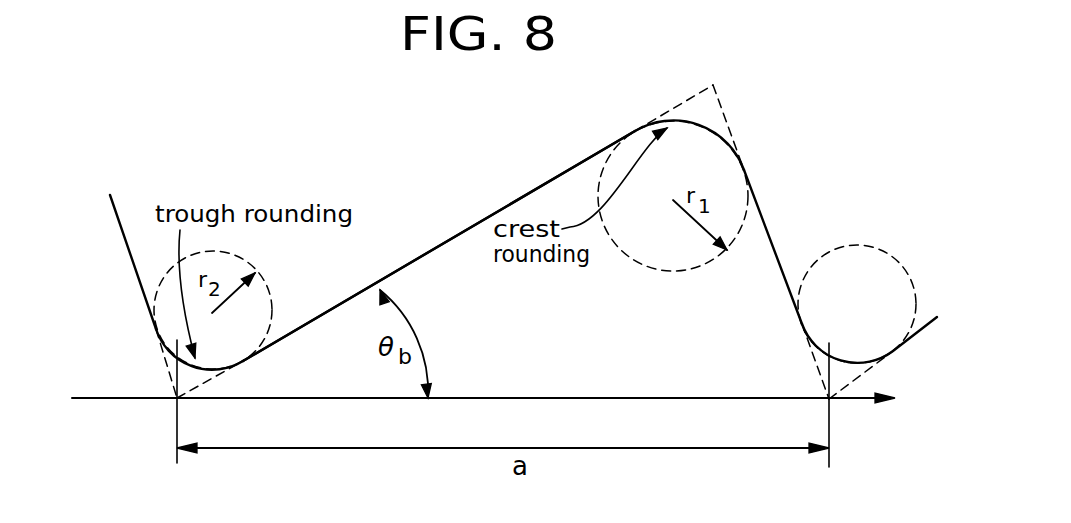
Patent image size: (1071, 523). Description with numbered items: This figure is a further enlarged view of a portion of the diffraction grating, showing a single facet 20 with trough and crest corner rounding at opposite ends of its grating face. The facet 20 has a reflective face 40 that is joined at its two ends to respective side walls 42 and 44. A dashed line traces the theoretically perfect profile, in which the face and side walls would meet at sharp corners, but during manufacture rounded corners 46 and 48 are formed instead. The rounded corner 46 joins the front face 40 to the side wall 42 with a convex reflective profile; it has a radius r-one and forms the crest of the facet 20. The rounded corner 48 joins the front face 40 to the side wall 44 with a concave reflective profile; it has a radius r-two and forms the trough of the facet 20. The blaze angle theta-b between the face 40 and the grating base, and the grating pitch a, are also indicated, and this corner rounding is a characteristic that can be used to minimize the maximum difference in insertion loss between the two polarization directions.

The facet 20 is at (493, 213).
The reflective face 40 is at (566, 172).
The side wall 42 is at (767, 229).
The side wall 44 is at (134, 262).
The rounded corner 46 is at (726, 132).
The rounded corner 48 is at (209, 368).